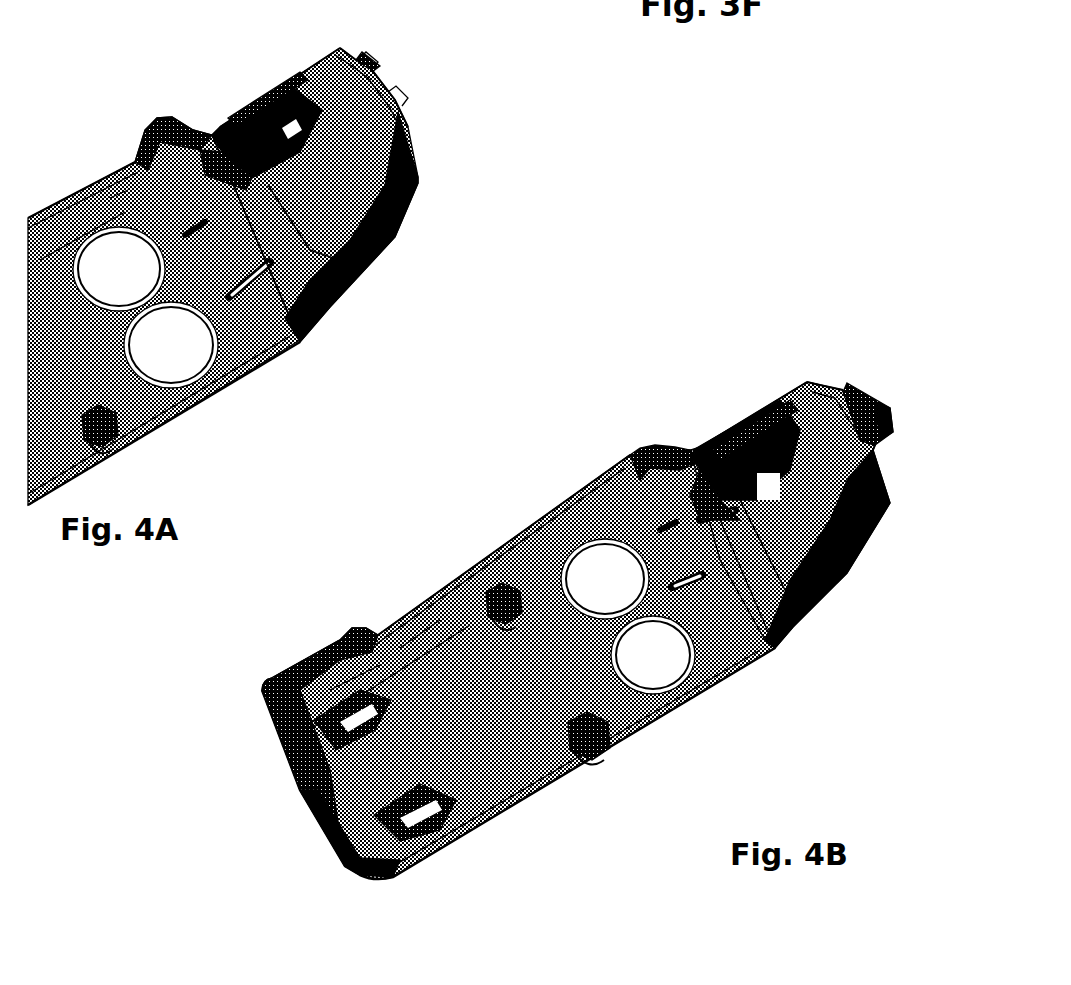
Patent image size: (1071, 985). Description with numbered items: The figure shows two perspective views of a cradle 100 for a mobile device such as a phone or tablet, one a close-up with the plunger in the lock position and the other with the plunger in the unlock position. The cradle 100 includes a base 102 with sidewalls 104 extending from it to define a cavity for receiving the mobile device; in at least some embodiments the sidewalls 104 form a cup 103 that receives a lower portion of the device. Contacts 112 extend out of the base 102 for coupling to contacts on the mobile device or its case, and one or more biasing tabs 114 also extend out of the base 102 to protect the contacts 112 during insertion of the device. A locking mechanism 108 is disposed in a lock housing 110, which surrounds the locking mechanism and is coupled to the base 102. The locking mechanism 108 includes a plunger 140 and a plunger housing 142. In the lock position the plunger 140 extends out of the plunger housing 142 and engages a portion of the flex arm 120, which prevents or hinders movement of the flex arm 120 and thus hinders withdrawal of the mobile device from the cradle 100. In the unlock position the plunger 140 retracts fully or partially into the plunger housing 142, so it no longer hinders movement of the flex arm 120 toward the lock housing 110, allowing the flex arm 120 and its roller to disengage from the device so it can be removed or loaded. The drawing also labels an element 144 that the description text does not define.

In FIG. 4A, the cradle 100 is at (432, 84).
In FIG. 4B, the cradle 100 is at (884, 336).
In FIG. 4A, the base 102 is at (139, 210).
In FIG. 4B, the base 102 is at (547, 592).
In FIG. 4B, the cup 103 is at (252, 713).
In FIG. 4A, the sidewalls 104 is at (137, 125).
In FIG. 4B, the sidewalls 104 is at (623, 455).
In FIG. 4A, the locking mechanism 108 is at (410, 130).
In FIG. 4B, the locking mechanism 108 is at (877, 458).
In FIG. 4A, the lock housing 110 is at (403, 223).
In FIG. 4B, the lock housing 110 is at (853, 567).
In FIG. 4B, the contacts 112 is at (307, 815).
In FIG. 4B, the biasing tabs 114 is at (362, 690).
In FIG. 4A, the flex arm 120 is at (206, 129).
In FIG. 4B, the flex arm 120 is at (693, 454).
In FIG. 4A, the plunger 140 is at (250, 109).
In FIG. 4B, the plunger 140 is at (772, 393).
In FIG. 4A, the plunger housing 142 is at (373, 71).
In FIG. 4B, the plunger housing 142 is at (878, 443).
In FIG. 4A, the retaining tab 144 is at (348, 270).
In FIG. 4B, the retaining tab 144 is at (747, 490).